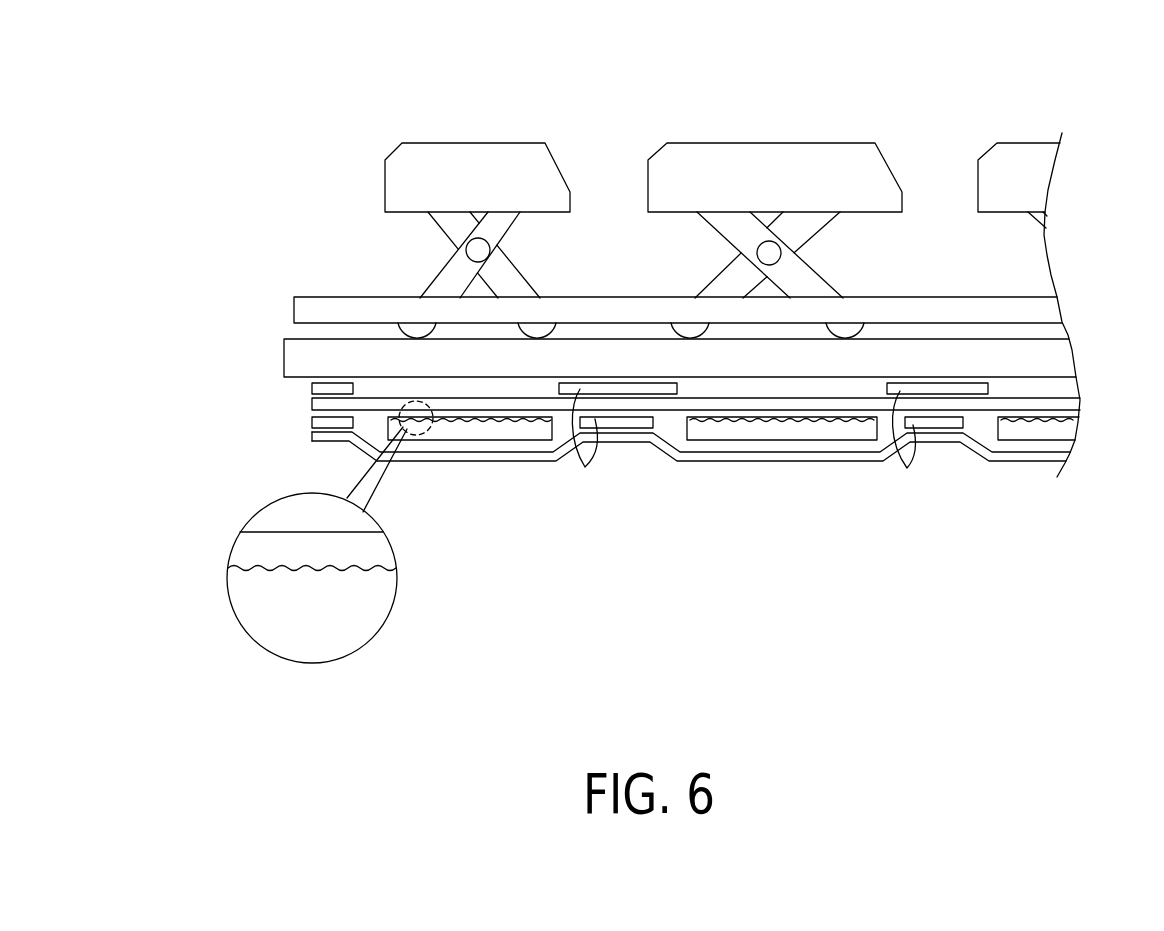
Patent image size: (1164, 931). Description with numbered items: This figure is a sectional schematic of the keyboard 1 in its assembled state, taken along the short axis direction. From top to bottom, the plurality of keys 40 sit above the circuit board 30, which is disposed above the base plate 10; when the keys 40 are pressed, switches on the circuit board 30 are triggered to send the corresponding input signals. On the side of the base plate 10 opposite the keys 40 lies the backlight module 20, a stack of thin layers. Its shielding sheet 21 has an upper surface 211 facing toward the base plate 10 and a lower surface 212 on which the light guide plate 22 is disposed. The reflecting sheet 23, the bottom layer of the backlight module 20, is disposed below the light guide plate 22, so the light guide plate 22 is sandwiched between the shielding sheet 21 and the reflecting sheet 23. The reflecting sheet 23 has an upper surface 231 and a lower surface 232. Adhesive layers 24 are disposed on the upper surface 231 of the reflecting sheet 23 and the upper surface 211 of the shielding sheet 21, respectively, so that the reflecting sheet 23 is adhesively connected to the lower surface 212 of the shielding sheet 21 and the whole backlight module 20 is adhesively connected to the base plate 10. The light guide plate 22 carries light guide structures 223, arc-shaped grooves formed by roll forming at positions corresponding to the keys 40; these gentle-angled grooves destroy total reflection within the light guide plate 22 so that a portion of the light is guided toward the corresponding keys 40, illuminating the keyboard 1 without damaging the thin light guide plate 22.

The keyboard 1 is at (214, 88).
The base plate 10 is at (298, 357).
The backlight module 20 is at (672, 480).
The shielding sheet 21 is at (323, 407).
The upper surface 211 is at (1067, 398).
The lower surface 212 is at (1068, 412).
The light guide plate 22 is at (497, 433).
The light guide structures 223 is at (417, 441).
The reflecting sheet 23 is at (328, 437).
The upper surface 231 is at (1068, 448).
The lower surface 232 is at (1040, 463).
The adhesive layers 24 is at (748, 446).
The circuit board 30 is at (317, 310).
The keys 40 is at (400, 157).